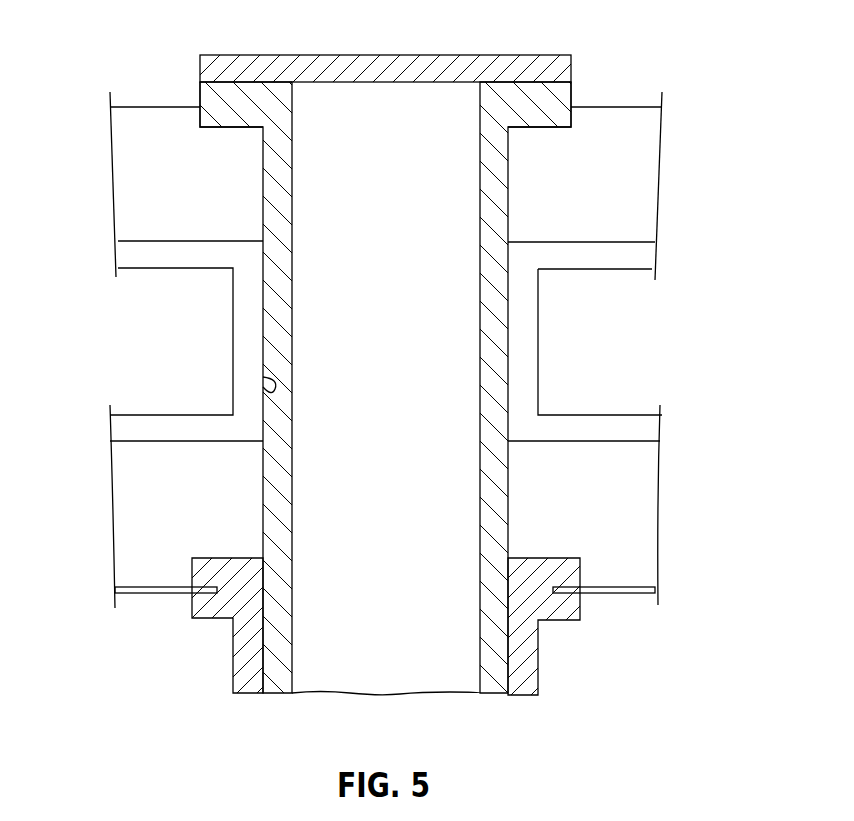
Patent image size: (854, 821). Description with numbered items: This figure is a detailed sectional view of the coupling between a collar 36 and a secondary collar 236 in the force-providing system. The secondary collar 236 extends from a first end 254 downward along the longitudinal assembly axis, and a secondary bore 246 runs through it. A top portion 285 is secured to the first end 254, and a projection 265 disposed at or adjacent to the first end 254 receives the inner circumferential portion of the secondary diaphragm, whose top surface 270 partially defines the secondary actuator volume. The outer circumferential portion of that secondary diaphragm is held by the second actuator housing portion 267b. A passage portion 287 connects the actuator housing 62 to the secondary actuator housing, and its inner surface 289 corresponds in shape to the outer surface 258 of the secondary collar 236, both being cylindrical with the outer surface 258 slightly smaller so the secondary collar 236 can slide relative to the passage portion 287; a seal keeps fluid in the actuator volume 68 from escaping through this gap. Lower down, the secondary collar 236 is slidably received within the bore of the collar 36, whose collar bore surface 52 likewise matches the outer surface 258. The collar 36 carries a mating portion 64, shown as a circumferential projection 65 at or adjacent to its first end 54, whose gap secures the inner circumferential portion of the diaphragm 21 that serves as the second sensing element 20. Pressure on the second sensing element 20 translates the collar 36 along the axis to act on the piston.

The first end 254 is at (136, 68).
The top surface 270 is at (175, 105).
The top portion 285 is at (437, 55).
The projection 265 is at (572, 92).
The outer surface 258 is at (263, 191).
The second actuator housing portion 267b is at (632, 253).
The passage portion 287 is at (233, 321).
The inner surface 289 is at (263, 377).
The secondary bore 246 is at (292, 347).
The actuator housing 62 is at (637, 430).
The secondary collar 236 is at (502, 480).
The actuator volume 68 is at (207, 514).
The second sensing element 20 is at (136, 576).
The diaphragm 21 is at (627, 585).
The first end 54 is at (590, 549).
The mating portion 64 is at (192, 613).
The circumferential projection 65 is at (209, 619).
The collar bore surface 52 is at (262, 645).
The collar 36 is at (520, 662).